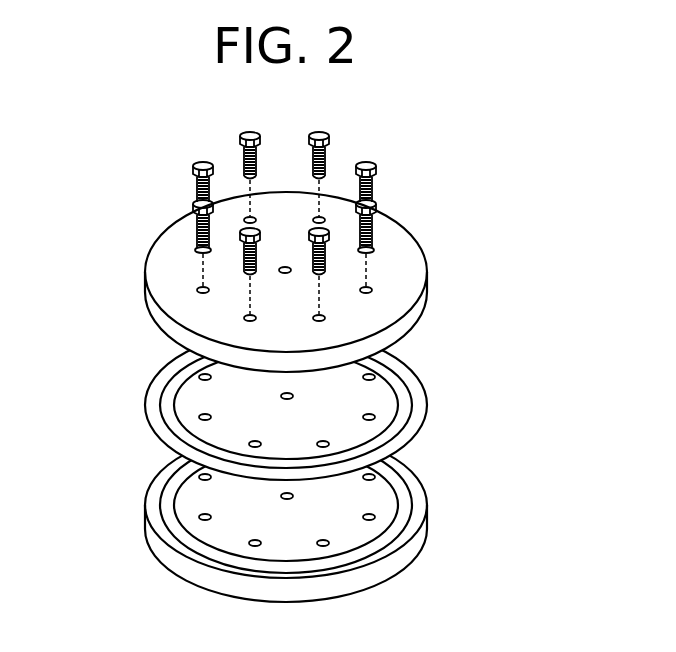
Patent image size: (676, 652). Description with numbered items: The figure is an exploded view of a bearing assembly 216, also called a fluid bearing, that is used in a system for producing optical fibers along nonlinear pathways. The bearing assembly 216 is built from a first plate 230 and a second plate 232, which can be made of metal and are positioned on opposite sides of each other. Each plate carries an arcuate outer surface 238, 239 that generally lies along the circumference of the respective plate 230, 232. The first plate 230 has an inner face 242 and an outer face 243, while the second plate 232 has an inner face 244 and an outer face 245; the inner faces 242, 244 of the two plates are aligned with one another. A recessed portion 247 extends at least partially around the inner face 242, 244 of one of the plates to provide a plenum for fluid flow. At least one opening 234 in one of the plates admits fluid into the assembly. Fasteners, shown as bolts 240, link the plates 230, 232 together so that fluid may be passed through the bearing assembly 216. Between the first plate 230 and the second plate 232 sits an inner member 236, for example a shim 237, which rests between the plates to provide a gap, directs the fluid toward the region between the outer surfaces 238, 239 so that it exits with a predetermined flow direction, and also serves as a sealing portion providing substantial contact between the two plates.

The bearing assembly 216 is at (478, 155).
The first plate 230 is at (403, 215).
The second plate 232 is at (428, 527).
The opening 234 is at (284, 266).
The inner member 236 is at (428, 387).
The shim 237 is at (172, 395).
The arcuate outer surface of first plate 238 is at (414, 307).
The arcuate outer surface of second plate 239 is at (153, 543).
The bolts 240 is at (331, 136).
The inner face of first plate 242 is at (131, 302).
The outer face of first plate 243 is at (165, 248).
The inner face of second plate 244 is at (385, 498).
The outer face of second plate 245 is at (385, 577).
The recessed portion 247 is at (168, 495).